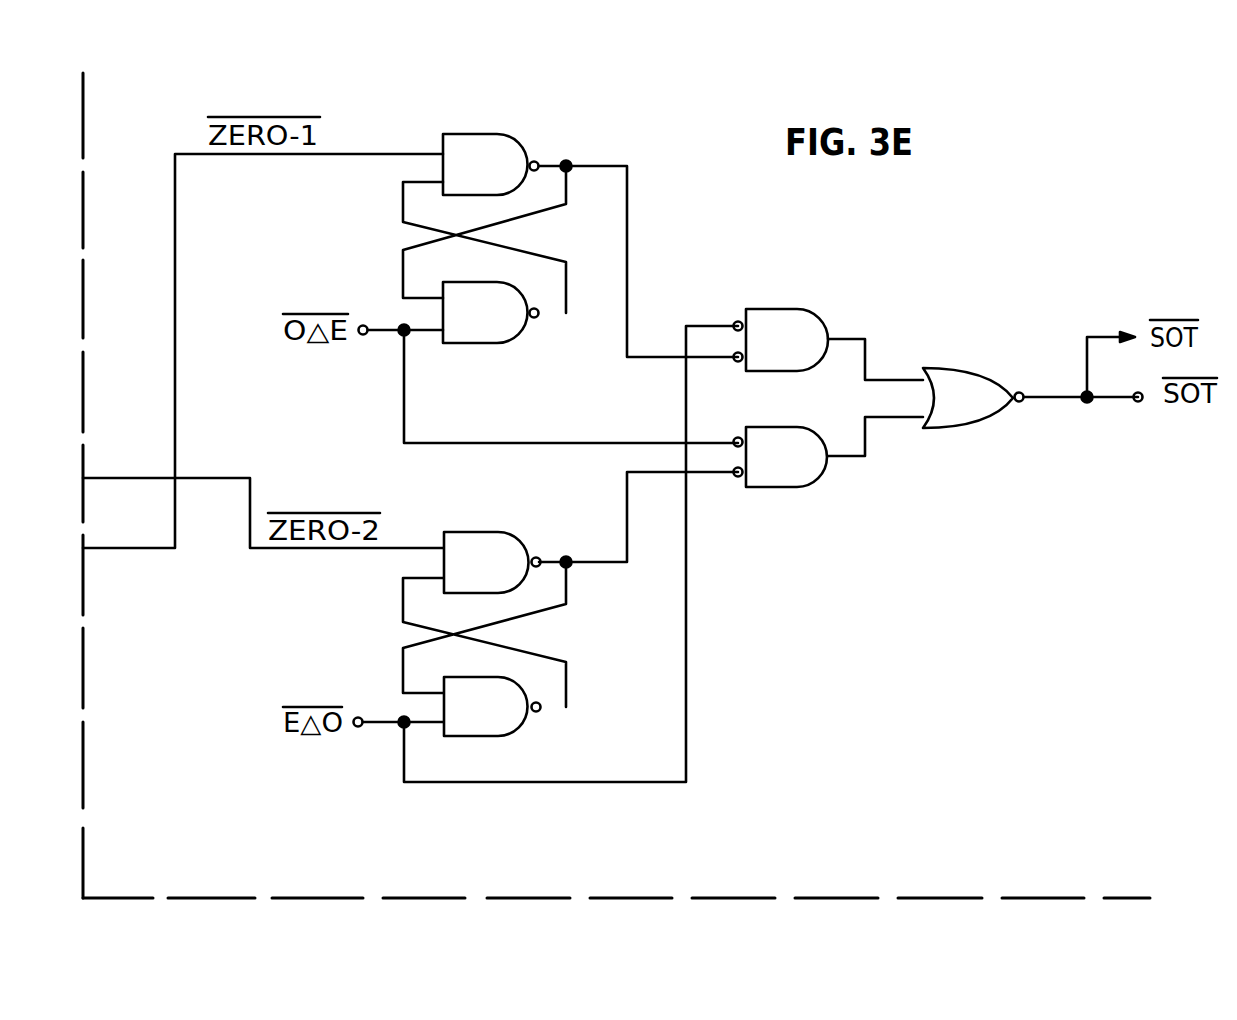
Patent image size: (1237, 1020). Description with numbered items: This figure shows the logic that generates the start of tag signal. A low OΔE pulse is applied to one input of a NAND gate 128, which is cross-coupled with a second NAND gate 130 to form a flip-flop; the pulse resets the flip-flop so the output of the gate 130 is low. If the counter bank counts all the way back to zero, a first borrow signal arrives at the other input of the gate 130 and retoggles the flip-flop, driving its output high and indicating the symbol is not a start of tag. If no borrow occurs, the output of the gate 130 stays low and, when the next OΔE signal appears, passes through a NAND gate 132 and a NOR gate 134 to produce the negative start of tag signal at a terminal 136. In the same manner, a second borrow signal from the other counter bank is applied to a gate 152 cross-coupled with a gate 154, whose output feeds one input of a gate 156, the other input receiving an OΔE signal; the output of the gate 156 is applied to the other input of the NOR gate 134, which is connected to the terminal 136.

The NAND gate 130 is at (496, 134).
The NAND gate 128 is at (474, 343).
The NAND gate 132 is at (770, 309).
The NOR gate 134 is at (945, 368).
The terminal 136 is at (1136, 402).
The gate 152 is at (470, 532).
The gate 154 is at (512, 736).
The gate 156 is at (782, 487).